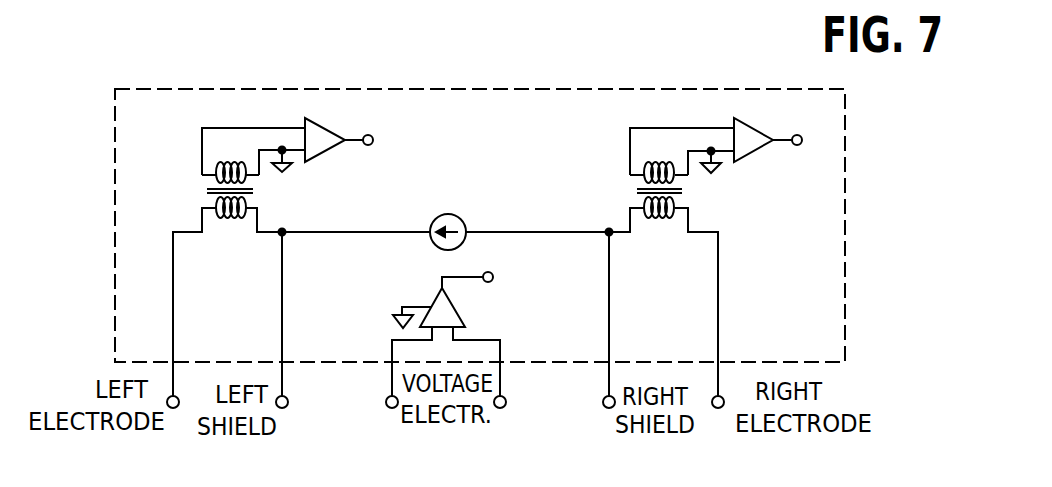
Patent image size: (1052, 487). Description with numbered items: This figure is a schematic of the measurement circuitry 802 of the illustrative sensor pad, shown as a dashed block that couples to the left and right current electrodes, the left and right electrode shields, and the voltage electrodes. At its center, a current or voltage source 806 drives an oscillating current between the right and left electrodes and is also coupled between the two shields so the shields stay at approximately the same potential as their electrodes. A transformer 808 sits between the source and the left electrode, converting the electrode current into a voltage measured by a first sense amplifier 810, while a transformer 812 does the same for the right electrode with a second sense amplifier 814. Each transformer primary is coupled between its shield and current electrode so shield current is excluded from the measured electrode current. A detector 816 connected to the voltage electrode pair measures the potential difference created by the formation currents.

The measurement circuitry 802 is at (172, 88).
The current or voltage source 806 is at (442, 248).
The transformer 808 is at (237, 220).
The first sense amplifier 810 is at (317, 157).
The transformer 812 is at (665, 223).
The second sense amplifier 814 is at (737, 160).
The detector 816 is at (463, 318).